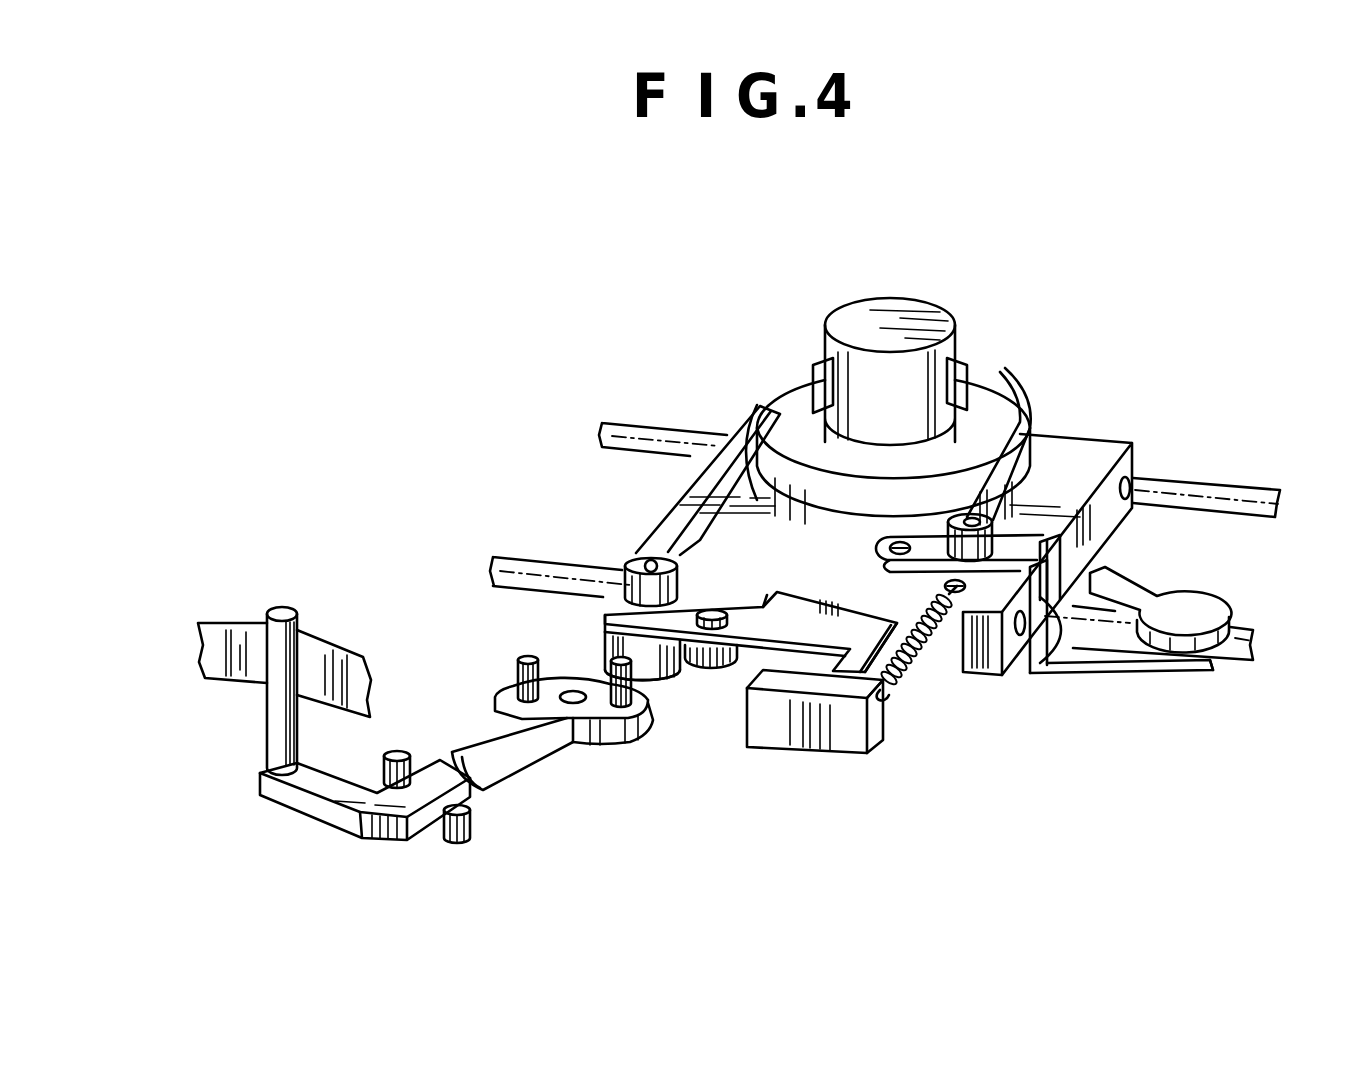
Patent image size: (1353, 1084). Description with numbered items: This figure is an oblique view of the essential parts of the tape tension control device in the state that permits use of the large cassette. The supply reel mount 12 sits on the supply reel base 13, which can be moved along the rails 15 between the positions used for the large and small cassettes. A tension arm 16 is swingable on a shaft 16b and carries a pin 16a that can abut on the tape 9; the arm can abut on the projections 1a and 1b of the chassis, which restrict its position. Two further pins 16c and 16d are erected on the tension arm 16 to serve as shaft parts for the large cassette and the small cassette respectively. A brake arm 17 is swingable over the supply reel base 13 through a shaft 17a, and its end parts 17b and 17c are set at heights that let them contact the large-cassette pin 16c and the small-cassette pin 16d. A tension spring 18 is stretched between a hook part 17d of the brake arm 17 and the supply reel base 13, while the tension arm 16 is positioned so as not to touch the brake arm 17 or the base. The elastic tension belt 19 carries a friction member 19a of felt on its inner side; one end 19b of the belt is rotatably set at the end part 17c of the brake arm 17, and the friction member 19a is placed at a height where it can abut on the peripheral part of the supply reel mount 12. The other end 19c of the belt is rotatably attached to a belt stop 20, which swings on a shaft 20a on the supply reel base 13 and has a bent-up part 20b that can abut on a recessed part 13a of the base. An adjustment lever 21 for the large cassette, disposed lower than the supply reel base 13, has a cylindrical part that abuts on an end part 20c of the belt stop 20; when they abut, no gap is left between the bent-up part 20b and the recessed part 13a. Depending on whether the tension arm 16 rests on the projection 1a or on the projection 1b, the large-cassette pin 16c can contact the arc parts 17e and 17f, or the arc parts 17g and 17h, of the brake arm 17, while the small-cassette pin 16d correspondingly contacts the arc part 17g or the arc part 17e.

The projection 1a is at (453, 843).
The projection 1b is at (397, 753).
The tape 9 is at (240, 620).
The supply reel mount 12 is at (957, 341).
The supply reel base 13 is at (1050, 433).
The recessed part 13a is at (1053, 553).
The rails 15 is at (1240, 487).
The tension arm 16 is at (298, 803).
The pin 16a is at (272, 715).
The shaft 16b is at (560, 705).
The large-cassette pin 16c is at (607, 744).
The small-cassette pin 16d is at (520, 672).
The brake arm 17 is at (772, 627).
The shaft 17a is at (707, 628).
The end part 17b is at (833, 740).
The end part 17c is at (580, 623).
The hook part 17d is at (893, 700).
The arc part 17e is at (672, 675).
The arc part 17f is at (577, 667).
The arc part 17g is at (735, 727).
The arc part 17h is at (887, 727).
The tension spring 18 is at (933, 643).
The tension belt 19 is at (710, 483).
The friction member 19a is at (758, 427).
The one end of tension belt 19b is at (635, 552).
The other end of tension belt 19c is at (1030, 507).
The belt stop 20 is at (1103, 662).
The shaft 20a is at (893, 533).
The bent-up part 20b is at (1053, 610).
The end part 20c is at (1227, 653).
The adjustment lever 21 is at (1195, 607).